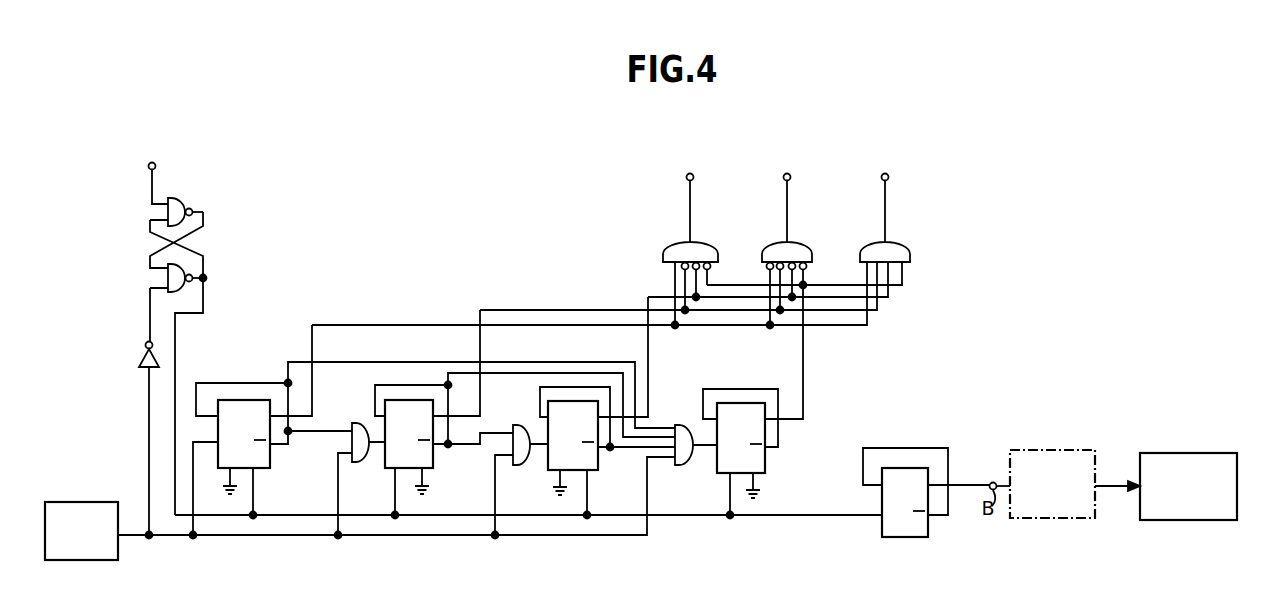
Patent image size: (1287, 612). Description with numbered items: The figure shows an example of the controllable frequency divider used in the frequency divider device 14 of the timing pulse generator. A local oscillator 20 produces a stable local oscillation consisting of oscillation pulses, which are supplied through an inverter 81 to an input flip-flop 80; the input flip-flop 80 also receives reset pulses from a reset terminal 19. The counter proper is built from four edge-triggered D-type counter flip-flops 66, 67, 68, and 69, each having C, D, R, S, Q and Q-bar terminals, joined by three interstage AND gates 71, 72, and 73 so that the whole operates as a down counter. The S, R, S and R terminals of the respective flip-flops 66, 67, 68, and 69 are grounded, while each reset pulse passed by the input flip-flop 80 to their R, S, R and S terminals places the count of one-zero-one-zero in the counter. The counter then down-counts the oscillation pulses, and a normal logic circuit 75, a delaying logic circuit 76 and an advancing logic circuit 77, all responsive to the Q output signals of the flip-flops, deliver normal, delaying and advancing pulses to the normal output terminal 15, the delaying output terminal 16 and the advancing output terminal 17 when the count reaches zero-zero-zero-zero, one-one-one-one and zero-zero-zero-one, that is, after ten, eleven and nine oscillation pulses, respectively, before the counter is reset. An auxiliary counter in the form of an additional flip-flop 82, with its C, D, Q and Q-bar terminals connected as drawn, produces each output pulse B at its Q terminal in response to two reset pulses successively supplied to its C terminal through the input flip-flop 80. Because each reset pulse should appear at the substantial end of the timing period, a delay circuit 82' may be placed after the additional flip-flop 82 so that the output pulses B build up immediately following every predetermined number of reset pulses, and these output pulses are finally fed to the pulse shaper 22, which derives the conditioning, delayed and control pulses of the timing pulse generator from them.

The frequency divider device 14 is at (1018, 274).
The reset terminal 19 is at (156, 165).
The input flip-flop 80 is at (205, 212).
The inverter 81 is at (139, 358).
The local oscillator 20 is at (70, 502).
The counter flip-flop 66 is at (270, 456).
The counter flip-flop 67 is at (433, 458).
The counter flip-flop 68 is at (598, 462).
The counter flip-flop 69 is at (765, 458).
The interstage AND gate 71 is at (357, 423).
The interstage AND gate 72 is at (523, 425).
The interstage AND gate 73 is at (687, 425).
The advancing logic circuit 77 is at (700, 247).
The normal logic circuit 75 is at (796, 247).
The delaying logic circuit 76 is at (890, 247).
The advancing output terminal 17 is at (686, 177).
The normal output terminal 15 is at (792, 177).
The delaying output terminal 16 is at (889, 177).
The additional flip-flop 82 is at (926, 499).
The delay circuit 82' is at (1055, 469).
The pulse shaper 22 is at (1183, 453).